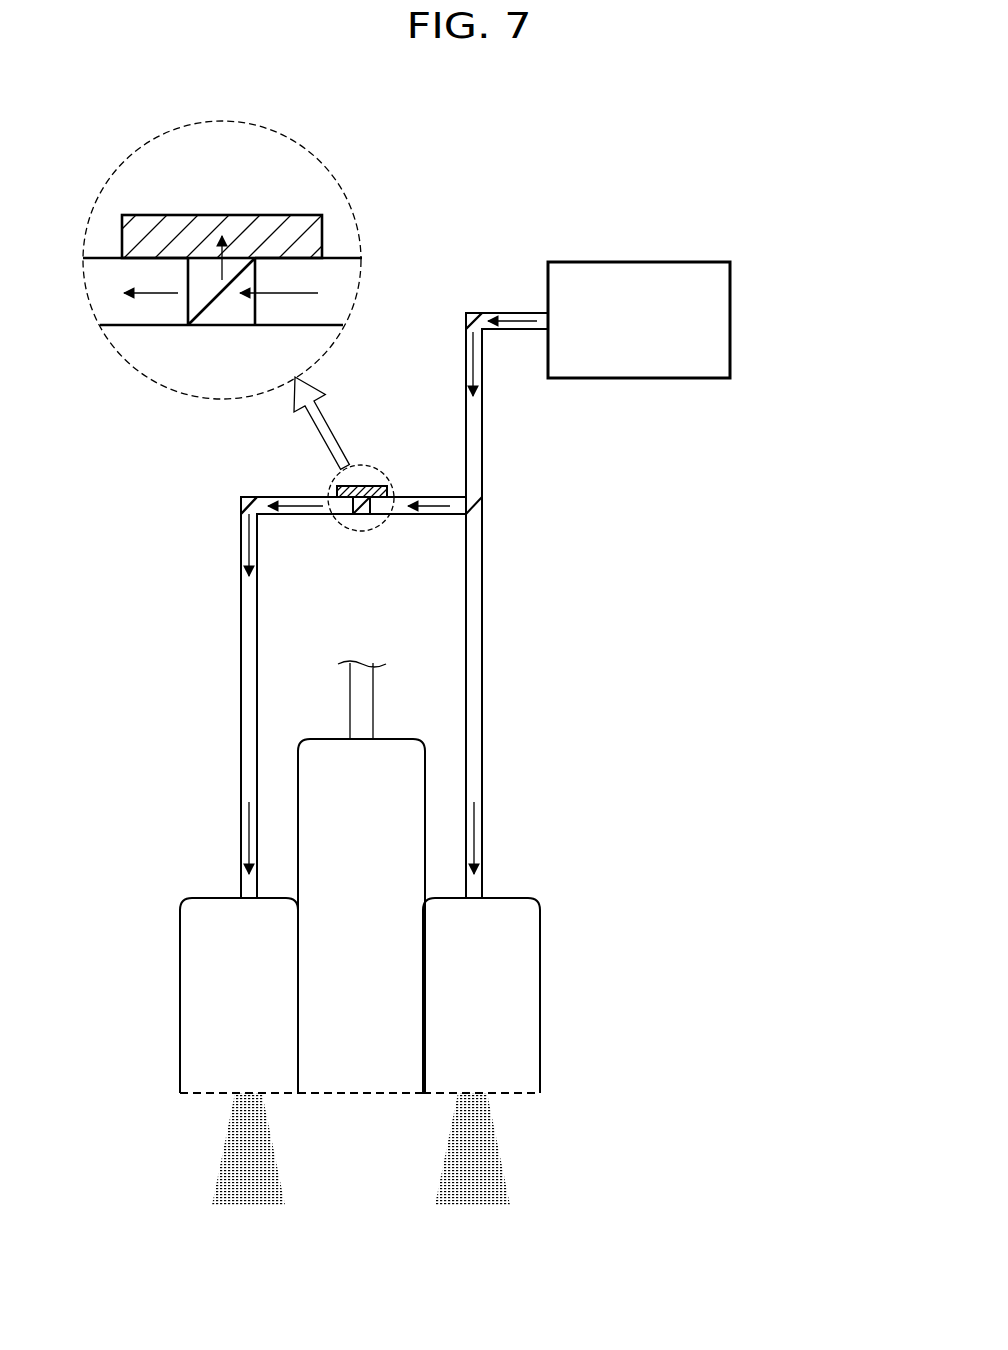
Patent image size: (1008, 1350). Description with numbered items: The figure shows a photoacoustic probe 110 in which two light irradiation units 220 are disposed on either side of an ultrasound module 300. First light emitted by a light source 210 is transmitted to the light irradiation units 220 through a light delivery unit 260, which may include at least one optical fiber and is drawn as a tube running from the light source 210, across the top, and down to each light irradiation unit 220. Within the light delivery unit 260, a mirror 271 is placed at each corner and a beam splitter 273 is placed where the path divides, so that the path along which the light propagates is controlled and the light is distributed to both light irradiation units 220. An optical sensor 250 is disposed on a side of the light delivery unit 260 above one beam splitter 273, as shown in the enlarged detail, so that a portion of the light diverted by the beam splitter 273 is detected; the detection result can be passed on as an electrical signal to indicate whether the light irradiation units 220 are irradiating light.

The photoacoustic probe 110 is at (756, 194).
The light source 210 is at (643, 262).
The light irradiation unit 220 is at (527, 1050).
The optical sensor 250 is at (303, 230).
The light delivery unit 260 is at (475, 472).
The mirror 271 is at (467, 312).
The beam splitter 273 is at (210, 323).
The ultrasound module 300 is at (357, 1073).